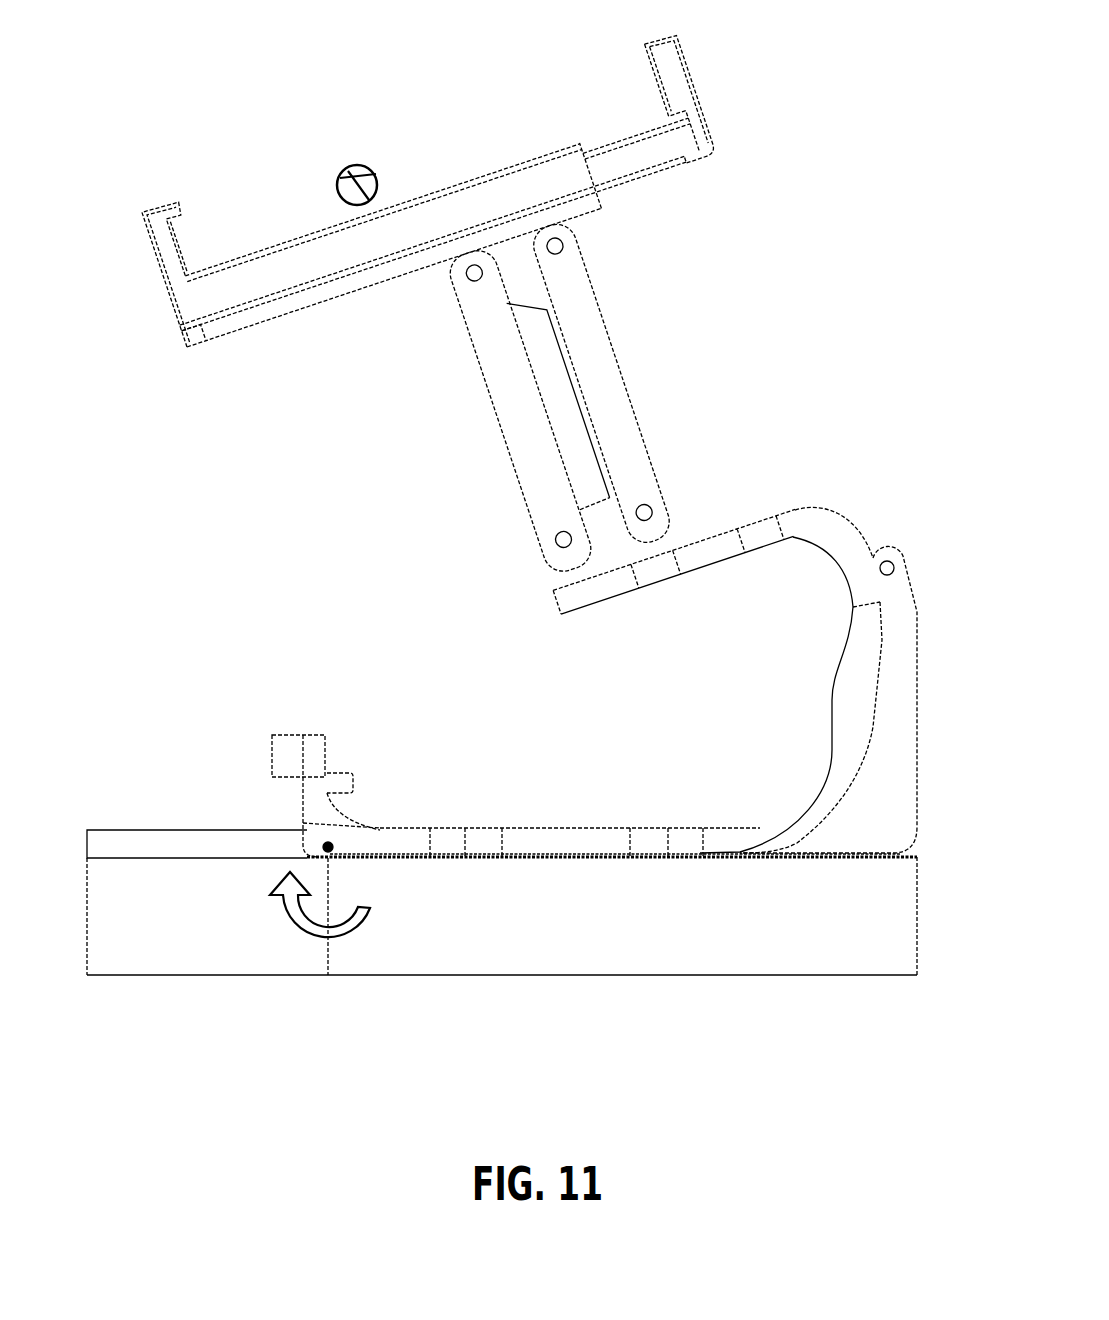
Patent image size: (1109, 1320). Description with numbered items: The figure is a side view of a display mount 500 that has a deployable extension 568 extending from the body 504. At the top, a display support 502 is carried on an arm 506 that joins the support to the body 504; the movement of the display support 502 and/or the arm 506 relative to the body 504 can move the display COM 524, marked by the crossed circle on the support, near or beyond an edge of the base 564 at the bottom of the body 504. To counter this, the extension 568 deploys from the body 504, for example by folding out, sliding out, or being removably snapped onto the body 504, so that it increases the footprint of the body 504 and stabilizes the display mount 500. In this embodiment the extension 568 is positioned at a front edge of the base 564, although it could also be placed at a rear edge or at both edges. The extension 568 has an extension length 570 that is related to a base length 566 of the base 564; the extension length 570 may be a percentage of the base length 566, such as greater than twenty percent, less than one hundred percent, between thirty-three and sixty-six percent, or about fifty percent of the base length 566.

The display mount 500 is at (525, 536).
The display support 502 is at (577, 188).
The body 504 is at (878, 520).
The arm 506 is at (622, 383).
The display COM 524 is at (345, 176).
The base 564 is at (590, 870).
The base length 566 is at (565, 976).
The extension 568 is at (183, 828).
The extension length 570 is at (168, 978).